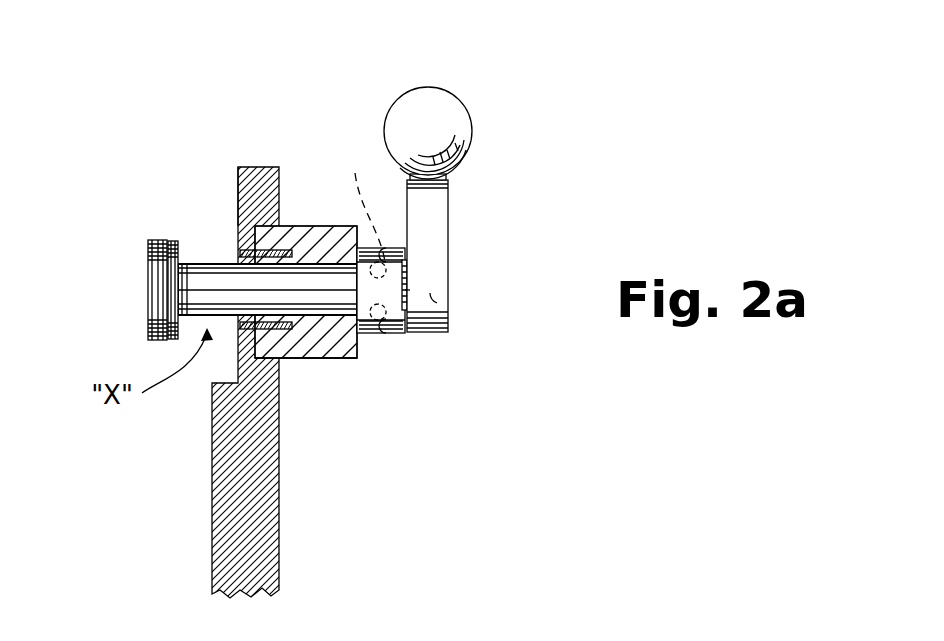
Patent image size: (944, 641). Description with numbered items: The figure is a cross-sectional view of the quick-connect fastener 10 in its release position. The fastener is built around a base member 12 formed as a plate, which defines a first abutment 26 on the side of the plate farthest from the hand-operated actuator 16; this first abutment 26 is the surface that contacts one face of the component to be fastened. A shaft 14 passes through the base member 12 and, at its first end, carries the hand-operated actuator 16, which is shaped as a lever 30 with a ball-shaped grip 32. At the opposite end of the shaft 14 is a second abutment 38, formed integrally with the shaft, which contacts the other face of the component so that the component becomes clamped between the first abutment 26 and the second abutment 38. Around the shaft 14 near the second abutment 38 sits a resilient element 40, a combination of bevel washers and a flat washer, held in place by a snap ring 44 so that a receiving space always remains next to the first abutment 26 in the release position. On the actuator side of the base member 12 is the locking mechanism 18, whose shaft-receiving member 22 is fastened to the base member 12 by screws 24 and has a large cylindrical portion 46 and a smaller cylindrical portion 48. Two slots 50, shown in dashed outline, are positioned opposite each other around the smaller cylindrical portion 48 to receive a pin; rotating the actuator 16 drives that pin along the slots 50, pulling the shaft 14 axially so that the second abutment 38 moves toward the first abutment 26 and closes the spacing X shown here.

The quick-connect fastener 10 is at (566, 89).
The base member 12 is at (240, 505).
The shaft 14 is at (408, 292).
The hand-operated actuator 16 is at (460, 247).
The locking mechanism 18 is at (311, 218).
The shaft-receiving member 22 is at (293, 360).
The screws 24 is at (238, 255).
The first abutment 26 is at (237, 195).
The lever 30 is at (437, 303).
The ball-shaped grip 32 is at (425, 118).
The second abutment 38 is at (148, 291).
The resilient element 40 is at (177, 236).
The snap ring 44 is at (188, 300).
The large cylindrical portion 46 is at (327, 360).
The smaller cylindrical portion 48 is at (392, 300).
The slot 50 is at (363, 230).